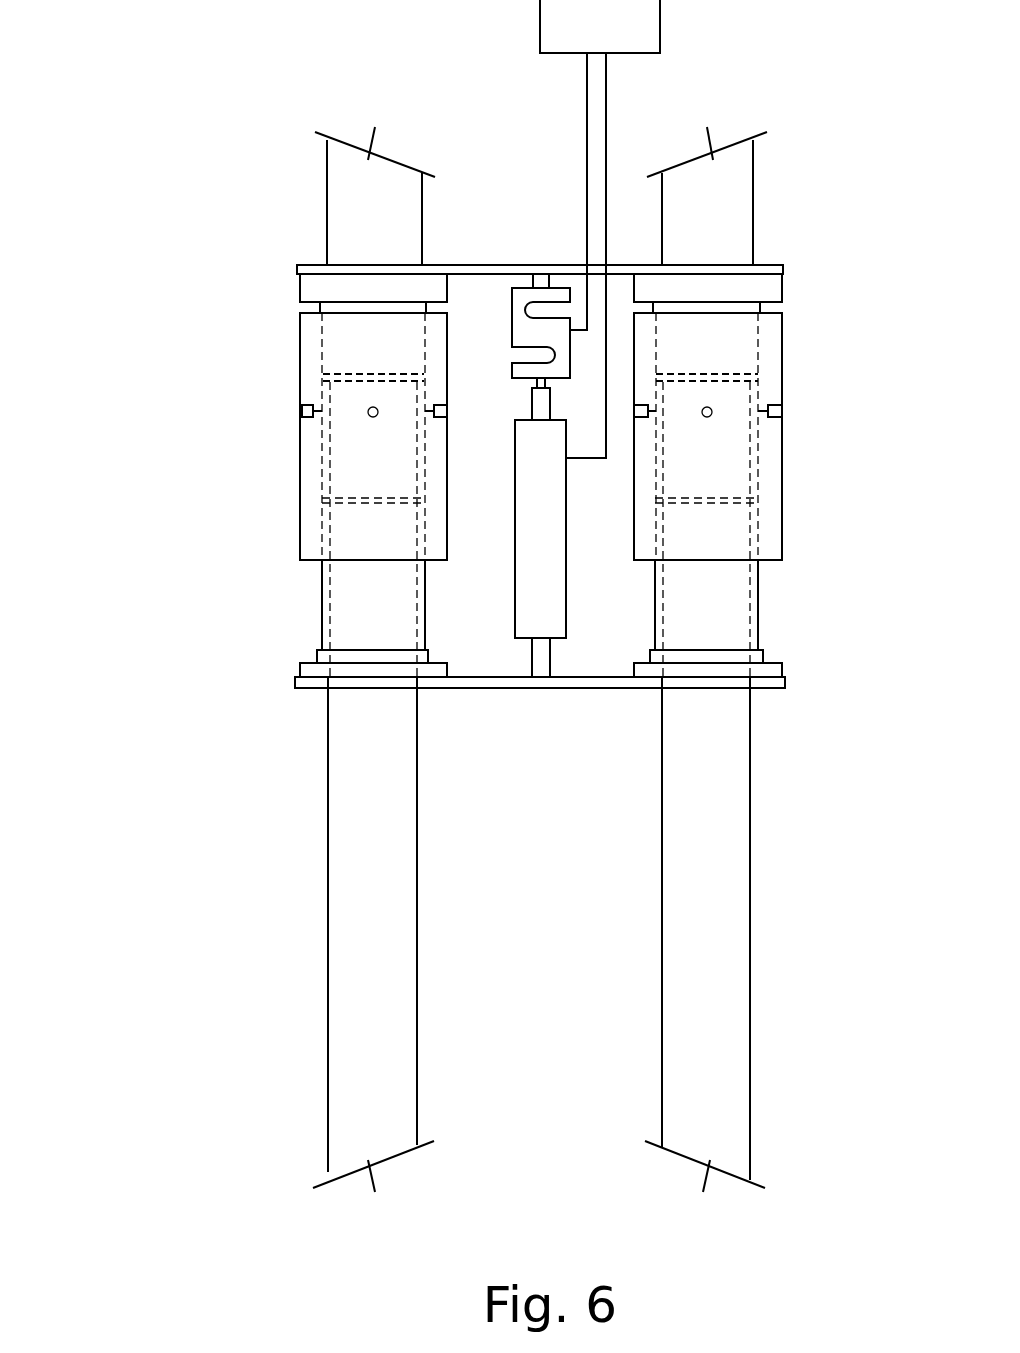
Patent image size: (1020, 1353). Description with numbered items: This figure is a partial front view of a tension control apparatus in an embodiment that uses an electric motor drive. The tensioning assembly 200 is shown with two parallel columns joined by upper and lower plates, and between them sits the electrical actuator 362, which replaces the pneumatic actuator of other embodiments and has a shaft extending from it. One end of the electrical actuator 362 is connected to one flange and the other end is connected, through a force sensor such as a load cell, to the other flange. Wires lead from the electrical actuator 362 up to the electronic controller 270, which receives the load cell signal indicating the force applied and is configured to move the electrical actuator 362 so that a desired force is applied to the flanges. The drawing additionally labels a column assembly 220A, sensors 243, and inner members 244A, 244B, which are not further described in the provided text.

The electronic controller 270 is at (600, 229).
The tensioning assembly 200 is at (814, 327).
The first actuator 220A is at (183, 515).
The position sensor 243 is at (303, 420).
The first piston rod 244A is at (350, 384).
The second piston rod 244B is at (730, 387).
The electrical actuator 362 is at (516, 538).